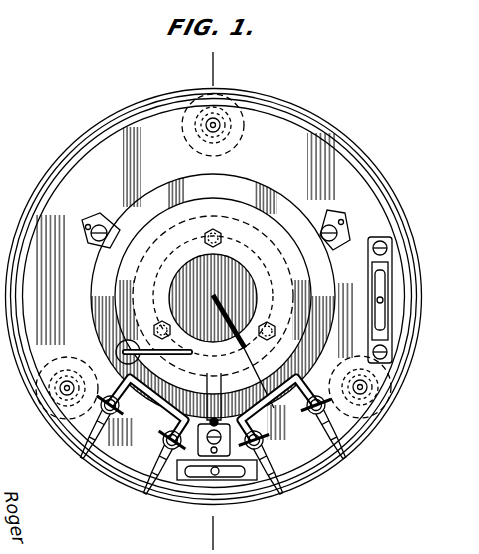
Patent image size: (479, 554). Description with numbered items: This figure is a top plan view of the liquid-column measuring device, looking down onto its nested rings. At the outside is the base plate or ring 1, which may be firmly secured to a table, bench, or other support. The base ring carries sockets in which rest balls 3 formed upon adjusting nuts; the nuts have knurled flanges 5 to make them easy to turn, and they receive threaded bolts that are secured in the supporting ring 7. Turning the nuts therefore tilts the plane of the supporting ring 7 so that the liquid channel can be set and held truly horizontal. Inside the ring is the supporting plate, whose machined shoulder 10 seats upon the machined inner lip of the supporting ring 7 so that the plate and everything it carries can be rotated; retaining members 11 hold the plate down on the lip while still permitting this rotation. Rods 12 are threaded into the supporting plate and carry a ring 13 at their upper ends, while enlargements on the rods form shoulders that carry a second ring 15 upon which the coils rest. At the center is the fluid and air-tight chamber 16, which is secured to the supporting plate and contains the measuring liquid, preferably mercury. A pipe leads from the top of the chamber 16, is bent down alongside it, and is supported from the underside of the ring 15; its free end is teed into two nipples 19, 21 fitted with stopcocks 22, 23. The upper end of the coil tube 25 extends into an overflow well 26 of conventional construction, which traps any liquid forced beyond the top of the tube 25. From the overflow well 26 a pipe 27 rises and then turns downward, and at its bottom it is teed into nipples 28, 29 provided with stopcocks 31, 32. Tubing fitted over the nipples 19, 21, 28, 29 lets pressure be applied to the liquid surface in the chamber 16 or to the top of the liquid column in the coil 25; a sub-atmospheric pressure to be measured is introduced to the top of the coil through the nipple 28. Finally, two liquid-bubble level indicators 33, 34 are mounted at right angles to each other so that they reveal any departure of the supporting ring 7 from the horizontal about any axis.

The base plate or ring 1 is at (419, 341).
The balls 3 is at (204, 65).
The knurled flanges 5 is at (182, 129).
The supporting ring 7 is at (370, 432).
The shoulder 10 is at (98, 298).
The retaining members 11 is at (91, 255).
The rods 12 is at (224, 242).
The ring 13 is at (300, 303).
The ring 15 is at (296, 340).
The fluid and air-tight chamber 16 is at (170, 296).
The nipple 19 is at (350, 462).
The nipple 21 is at (284, 500).
The stopcock 22 is at (280, 412).
The stopcock 23 is at (270, 438).
The tube 25 is at (292, 312).
The overflow well 26 is at (128, 352).
The pipe 27 is at (120, 342).
The nipple 28 is at (80, 462).
The nipple 29 is at (143, 500).
The stopcock 31 is at (126, 425).
The stopcock 32 is at (166, 430).
The level indicator 33 is at (388, 290).
The level indicator 34 is at (230, 480).